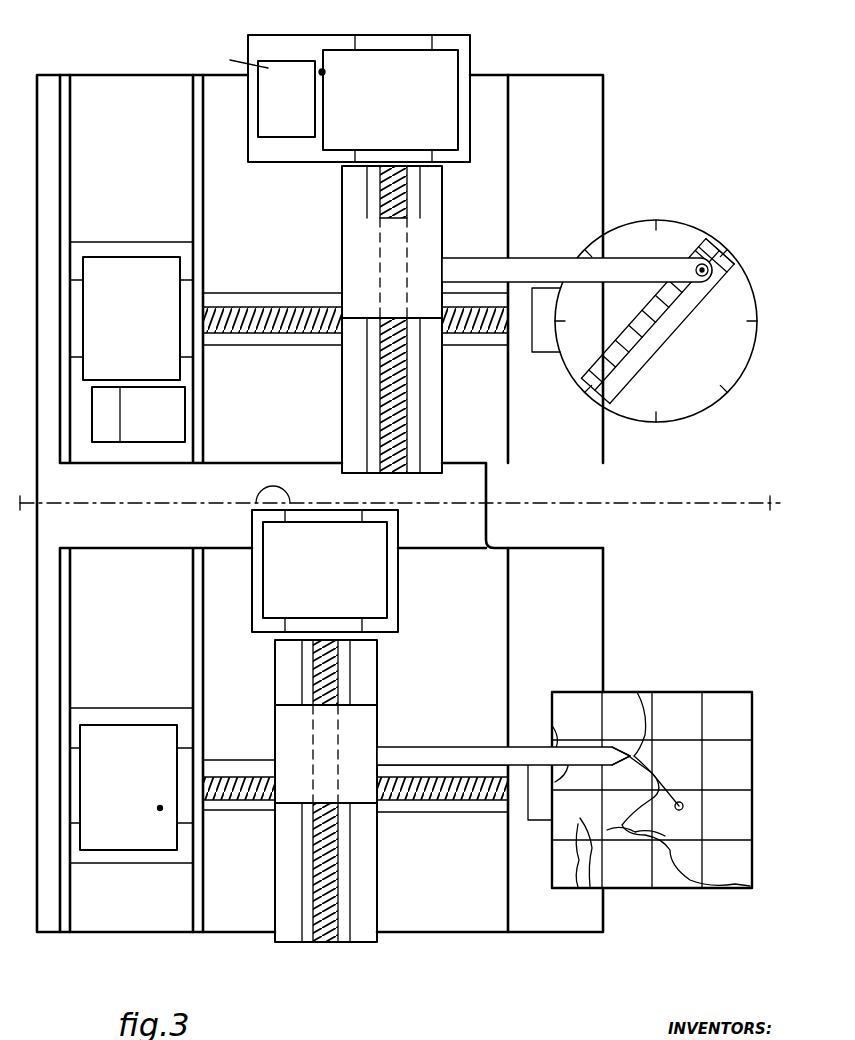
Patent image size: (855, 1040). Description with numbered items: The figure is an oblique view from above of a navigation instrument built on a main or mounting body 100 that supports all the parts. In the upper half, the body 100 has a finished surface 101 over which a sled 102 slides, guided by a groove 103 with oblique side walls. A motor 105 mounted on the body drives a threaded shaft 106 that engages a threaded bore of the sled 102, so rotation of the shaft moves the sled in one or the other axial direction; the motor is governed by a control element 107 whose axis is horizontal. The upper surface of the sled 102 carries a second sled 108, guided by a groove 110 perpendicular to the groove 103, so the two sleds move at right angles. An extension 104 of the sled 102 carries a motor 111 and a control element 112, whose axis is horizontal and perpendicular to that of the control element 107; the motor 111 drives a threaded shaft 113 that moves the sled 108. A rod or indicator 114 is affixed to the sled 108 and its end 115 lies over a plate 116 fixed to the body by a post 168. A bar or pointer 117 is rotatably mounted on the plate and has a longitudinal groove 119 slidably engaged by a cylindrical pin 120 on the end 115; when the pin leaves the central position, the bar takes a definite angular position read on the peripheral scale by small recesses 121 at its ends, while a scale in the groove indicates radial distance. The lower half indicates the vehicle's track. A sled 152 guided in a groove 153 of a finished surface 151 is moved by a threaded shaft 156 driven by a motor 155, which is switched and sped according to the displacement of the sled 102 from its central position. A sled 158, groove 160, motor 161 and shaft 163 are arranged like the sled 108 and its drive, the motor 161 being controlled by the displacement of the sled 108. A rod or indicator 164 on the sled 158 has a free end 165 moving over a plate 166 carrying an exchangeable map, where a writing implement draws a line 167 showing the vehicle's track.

The main or mounting body 100 is at (400, 503).
The finished surface 101 is at (331, 311).
The sled 102 is at (352, 432).
The groove 103 is at (277, 342).
The extension or integral part of the sled 104 is at (265, 155).
The motor 105 is at (131, 318).
The shaft 106 is at (231, 306).
The control element 107 is at (138, 414).
The second sled 108 is at (437, 252).
The groove 110 is at (408, 414).
The motor 111 is at (390, 100).
The control element 112 is at (240, 95).
The shaft 113 is at (385, 193).
The rod or indicator 114 is at (522, 266).
The end of rod 115 is at (718, 262).
The plate 116 is at (692, 410).
The bar or pointer 117 is at (714, 240).
The longitudinal groove 119 is at (612, 366).
The cylindrical pin 120 is at (708, 272).
The small recesses 121 is at (717, 255).
The finished surface 151 is at (284, 740).
The sled 152 is at (378, 696).
The groove 153 is at (238, 812).
The motor 155 is at (131, 787).
The threaded shaft 156 is at (448, 812).
The sled 158 is at (286, 746).
The groove 160 is at (345, 930).
The motor 161 is at (325, 571).
The shaft 163 is at (320, 942).
The rod or indicator 164 is at (425, 756).
The free end 165 is at (627, 757).
The plate 166 is at (673, 880).
The line 167 is at (672, 788).
The post 168 is at (551, 353).